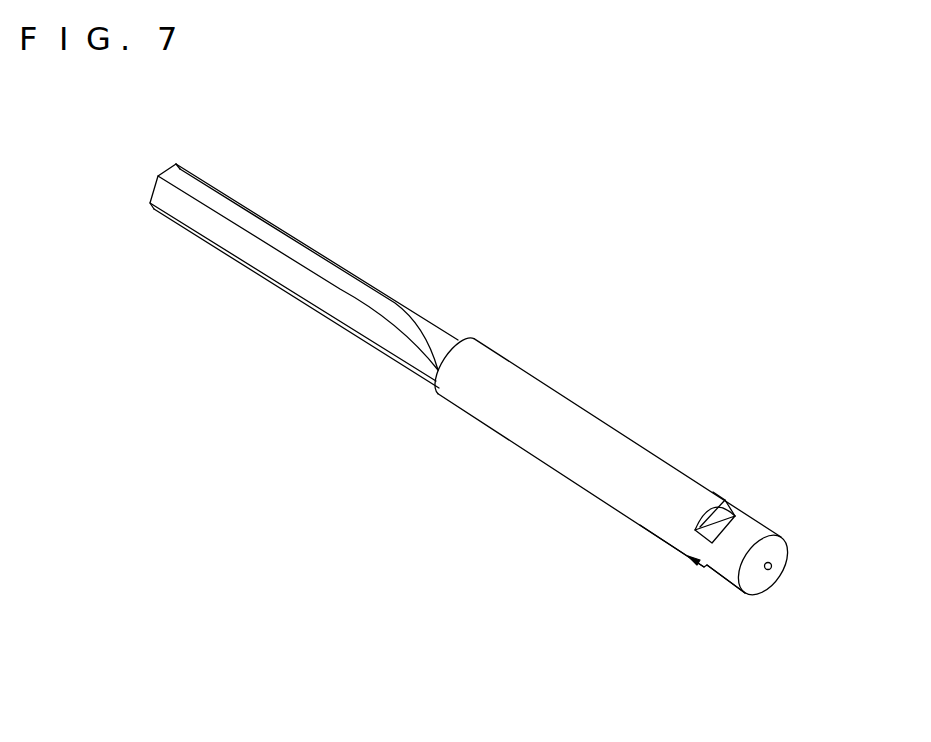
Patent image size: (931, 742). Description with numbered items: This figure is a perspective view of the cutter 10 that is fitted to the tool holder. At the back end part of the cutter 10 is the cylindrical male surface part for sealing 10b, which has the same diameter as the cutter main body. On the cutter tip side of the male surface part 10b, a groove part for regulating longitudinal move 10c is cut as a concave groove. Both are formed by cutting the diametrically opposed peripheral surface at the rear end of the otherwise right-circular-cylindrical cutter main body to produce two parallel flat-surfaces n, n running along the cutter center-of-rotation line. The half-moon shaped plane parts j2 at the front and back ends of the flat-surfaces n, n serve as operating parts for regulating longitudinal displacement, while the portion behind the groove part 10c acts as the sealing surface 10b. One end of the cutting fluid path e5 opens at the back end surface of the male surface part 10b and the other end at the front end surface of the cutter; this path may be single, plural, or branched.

The cutter 10 is at (558, 384).
The cylindrical male surface part for sealing 10b is at (728, 577).
The groove part for regulating longitudinal move 10c is at (690, 573).
The half-moon shaped plane part j2 is at (714, 496).
The flat-surface n is at (705, 511).
The cutting fluid path e5 is at (771, 568).